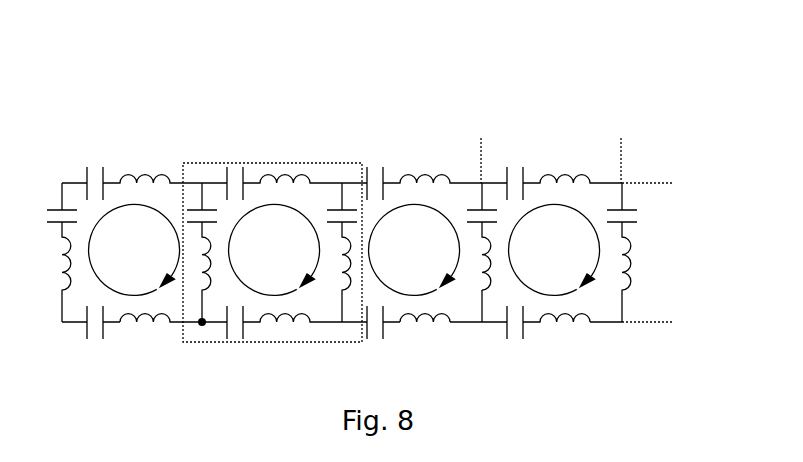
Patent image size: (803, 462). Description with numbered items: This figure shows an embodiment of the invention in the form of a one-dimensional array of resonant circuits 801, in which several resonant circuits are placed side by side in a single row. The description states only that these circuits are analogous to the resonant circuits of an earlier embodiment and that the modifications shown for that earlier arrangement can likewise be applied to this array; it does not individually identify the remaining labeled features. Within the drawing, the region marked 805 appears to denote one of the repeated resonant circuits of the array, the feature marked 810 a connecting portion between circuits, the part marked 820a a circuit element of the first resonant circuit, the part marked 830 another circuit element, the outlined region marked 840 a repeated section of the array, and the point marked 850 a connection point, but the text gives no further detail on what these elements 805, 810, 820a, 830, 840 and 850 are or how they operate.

The coupled resonator array circuit 801 is at (183, 131).
The resonator unit 805 is at (490, 155).
The conductor / wire segment 810 is at (456, 323).
The capacitor 820a is at (96, 338).
The inductor 830 is at (434, 329).
The unit cell 840 is at (312, 162).
The node 850 is at (202, 329).